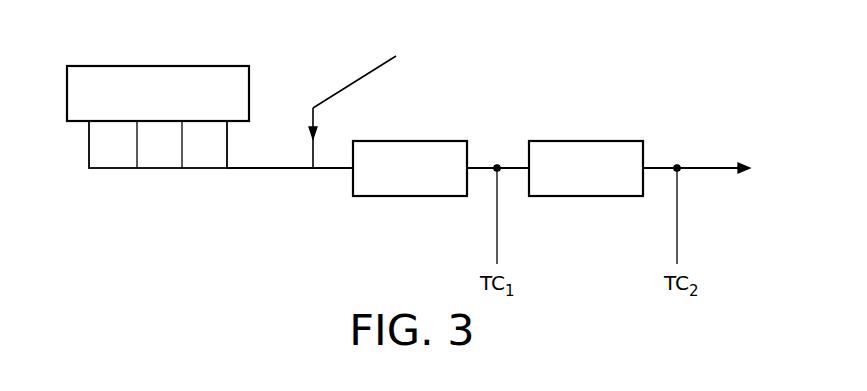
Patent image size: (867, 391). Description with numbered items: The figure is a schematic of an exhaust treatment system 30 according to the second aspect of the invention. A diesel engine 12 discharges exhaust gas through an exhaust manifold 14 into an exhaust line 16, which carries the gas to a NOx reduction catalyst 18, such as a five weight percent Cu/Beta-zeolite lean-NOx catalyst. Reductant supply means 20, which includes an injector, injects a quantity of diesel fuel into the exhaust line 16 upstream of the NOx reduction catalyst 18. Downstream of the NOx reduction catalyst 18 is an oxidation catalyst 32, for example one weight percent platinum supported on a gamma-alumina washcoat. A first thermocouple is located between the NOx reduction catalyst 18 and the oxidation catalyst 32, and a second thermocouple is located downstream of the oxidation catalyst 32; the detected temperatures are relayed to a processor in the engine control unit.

The diesel engine 12 is at (154, 66).
The exhaust manifold 14 is at (158, 169).
The exhaust line 16 is at (272, 169).
The NOx reduction catalyst 18 is at (405, 141).
The reductant supply means 20 is at (341, 85).
The system 30 is at (518, 61).
The oxidation catalyst 32 is at (583, 141).